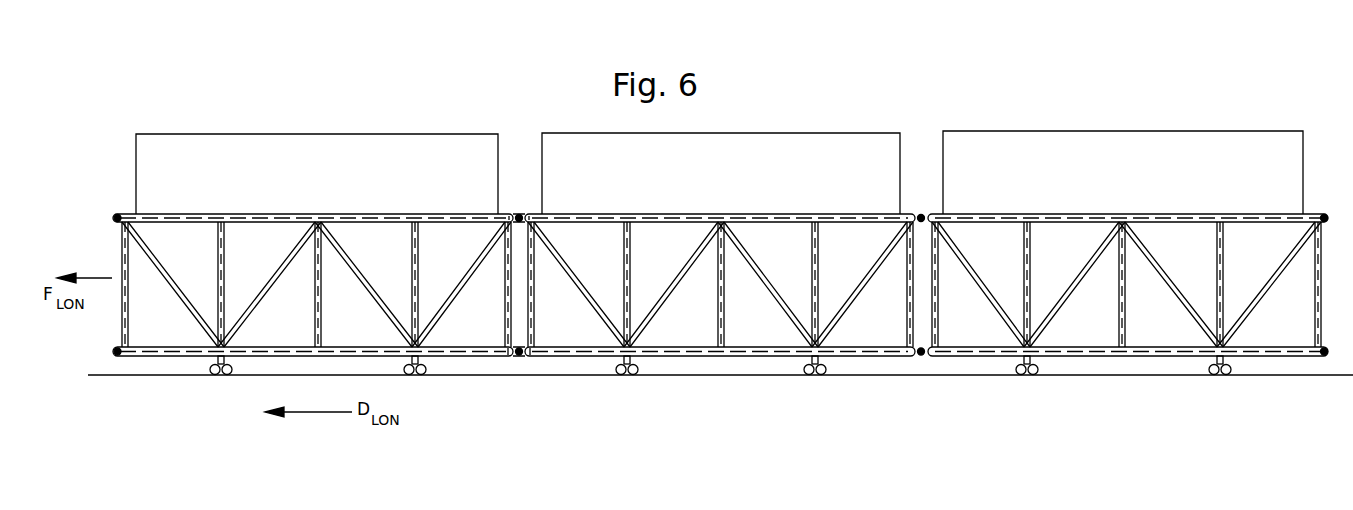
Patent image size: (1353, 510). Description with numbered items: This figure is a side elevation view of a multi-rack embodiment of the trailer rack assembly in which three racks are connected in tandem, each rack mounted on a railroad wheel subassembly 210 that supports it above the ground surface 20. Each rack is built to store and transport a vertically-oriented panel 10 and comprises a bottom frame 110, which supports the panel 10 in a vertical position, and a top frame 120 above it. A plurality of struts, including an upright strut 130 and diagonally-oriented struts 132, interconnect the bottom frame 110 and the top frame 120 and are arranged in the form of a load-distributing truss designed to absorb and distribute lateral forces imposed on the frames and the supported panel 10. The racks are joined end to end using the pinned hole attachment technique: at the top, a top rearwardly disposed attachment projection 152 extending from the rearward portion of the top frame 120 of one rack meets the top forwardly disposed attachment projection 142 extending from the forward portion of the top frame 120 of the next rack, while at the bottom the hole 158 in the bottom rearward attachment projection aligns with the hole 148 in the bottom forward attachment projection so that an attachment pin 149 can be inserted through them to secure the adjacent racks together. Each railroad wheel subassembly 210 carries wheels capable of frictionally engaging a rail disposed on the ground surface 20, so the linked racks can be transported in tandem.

The panel 10 is at (487, 142).
The ground surface 20 is at (877, 377).
The bottom frame 110 is at (178, 358).
The top frame 120 is at (163, 217).
The strut 130 is at (217, 240).
The diagonally-oriented strut 132 is at (173, 297).
The top forwardly disposed attachment projection 142 is at (523, 214).
The hole 148 is at (526, 358).
The attachment pin 149 is at (518, 358).
The top rearwardly disposed attachment projection 152 is at (521, 213).
The hole 158 is at (512, 358).
The railroad wheel subassembly 210 is at (1030, 377).